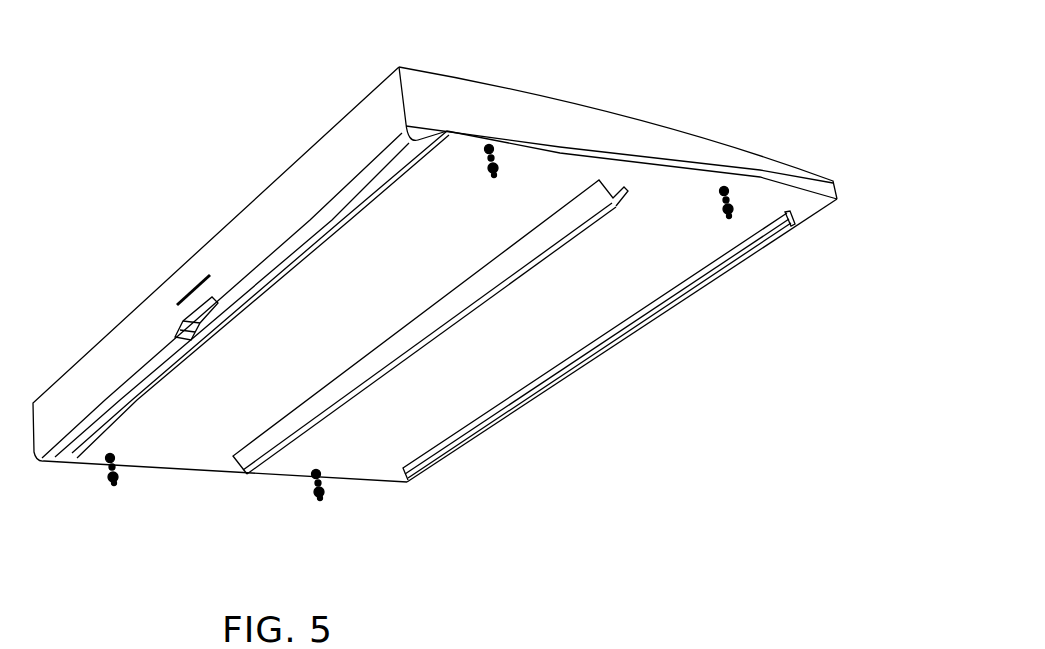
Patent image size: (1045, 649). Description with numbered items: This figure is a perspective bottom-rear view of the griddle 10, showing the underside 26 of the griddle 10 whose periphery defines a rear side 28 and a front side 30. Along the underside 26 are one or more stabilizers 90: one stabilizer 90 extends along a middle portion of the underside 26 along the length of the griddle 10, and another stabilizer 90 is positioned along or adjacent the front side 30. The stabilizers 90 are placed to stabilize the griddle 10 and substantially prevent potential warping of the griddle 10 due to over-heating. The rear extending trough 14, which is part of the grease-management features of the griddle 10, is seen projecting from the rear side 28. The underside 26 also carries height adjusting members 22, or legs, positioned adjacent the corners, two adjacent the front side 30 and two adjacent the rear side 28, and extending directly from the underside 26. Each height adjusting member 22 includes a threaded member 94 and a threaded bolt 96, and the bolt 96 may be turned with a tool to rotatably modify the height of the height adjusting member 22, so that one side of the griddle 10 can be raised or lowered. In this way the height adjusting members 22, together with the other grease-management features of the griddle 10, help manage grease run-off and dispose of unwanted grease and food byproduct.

The griddle 10 is at (435, 243).
The rear side 28 is at (200, 206).
The rear extending trough 14 is at (278, 285).
The stabilizers 90 is at (575, 211).
The height adjusting members 22 is at (136, 480).
The threaded member 94 is at (738, 217).
The threaded bolt 96 is at (737, 203).
The underside 26 is at (673, 214).
The front side 30 is at (692, 339).